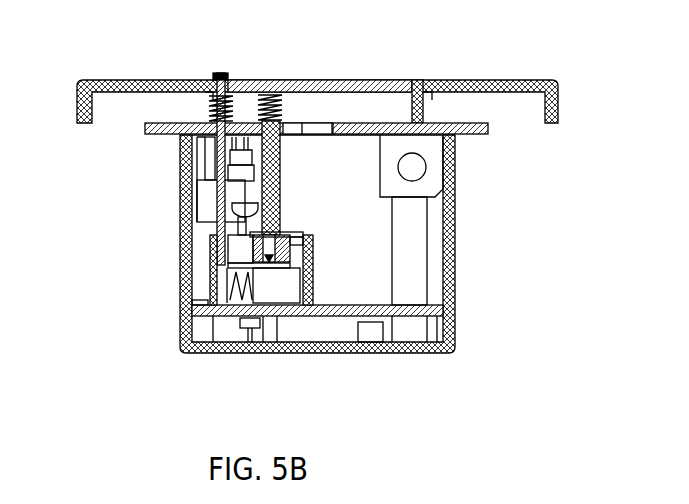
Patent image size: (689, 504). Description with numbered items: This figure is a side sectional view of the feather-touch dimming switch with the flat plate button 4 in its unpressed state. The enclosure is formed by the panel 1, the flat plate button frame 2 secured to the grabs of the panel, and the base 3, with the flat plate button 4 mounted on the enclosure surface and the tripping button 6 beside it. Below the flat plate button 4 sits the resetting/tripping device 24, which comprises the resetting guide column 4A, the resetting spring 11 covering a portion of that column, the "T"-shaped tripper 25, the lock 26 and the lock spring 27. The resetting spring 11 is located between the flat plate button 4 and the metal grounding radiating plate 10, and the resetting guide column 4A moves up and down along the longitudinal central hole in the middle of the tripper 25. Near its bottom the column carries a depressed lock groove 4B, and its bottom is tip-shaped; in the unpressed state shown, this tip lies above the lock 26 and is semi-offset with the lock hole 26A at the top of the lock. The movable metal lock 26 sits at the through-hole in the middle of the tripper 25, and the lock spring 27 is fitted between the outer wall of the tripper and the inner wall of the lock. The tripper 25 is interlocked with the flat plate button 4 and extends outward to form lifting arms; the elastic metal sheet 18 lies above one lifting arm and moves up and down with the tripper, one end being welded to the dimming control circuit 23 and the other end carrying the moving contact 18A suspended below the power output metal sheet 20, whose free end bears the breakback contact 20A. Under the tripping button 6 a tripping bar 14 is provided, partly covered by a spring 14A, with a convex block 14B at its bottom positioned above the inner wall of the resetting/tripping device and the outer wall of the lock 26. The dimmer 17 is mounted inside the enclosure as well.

The panel 1 is at (482, 80).
The flat plate button frame 2 is at (418, 80).
The base 3 is at (457, 327).
The flat plate button 4 is at (325, 80).
The resetting guide column 4A is at (281, 170).
The lock groove 4B is at (312, 250).
The tripping button 6 is at (213, 73).
The metal grounding radiating plate 10 is at (488, 128).
The resetting spring 11 is at (285, 106).
The tripping bar 14 is at (207, 210).
The spring 14A is at (210, 108).
The convex block 14B is at (213, 260).
The dimmer 17 is at (208, 184).
The elastic metal sheet 18 is at (302, 232).
The moving contact 18A is at (256, 228).
The power output metal sheet 20 is at (256, 205).
The breakback contact 20A is at (215, 226).
The dimming control circuit 23 is at (180, 310).
The resetting/tripping device 24 is at (314, 287).
The "T"-shaped tripper 25 is at (273, 309).
The lock 26 is at (212, 278).
The lock hole 26A is at (265, 269).
The lock spring 27 is at (236, 309).